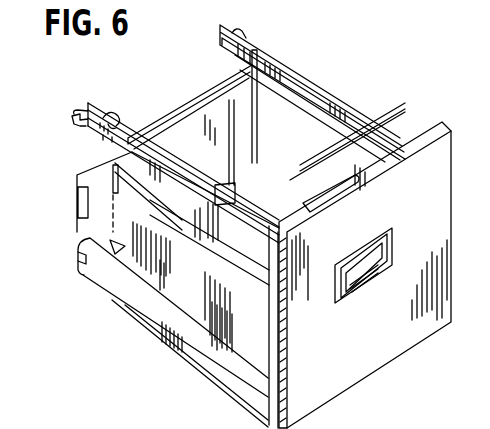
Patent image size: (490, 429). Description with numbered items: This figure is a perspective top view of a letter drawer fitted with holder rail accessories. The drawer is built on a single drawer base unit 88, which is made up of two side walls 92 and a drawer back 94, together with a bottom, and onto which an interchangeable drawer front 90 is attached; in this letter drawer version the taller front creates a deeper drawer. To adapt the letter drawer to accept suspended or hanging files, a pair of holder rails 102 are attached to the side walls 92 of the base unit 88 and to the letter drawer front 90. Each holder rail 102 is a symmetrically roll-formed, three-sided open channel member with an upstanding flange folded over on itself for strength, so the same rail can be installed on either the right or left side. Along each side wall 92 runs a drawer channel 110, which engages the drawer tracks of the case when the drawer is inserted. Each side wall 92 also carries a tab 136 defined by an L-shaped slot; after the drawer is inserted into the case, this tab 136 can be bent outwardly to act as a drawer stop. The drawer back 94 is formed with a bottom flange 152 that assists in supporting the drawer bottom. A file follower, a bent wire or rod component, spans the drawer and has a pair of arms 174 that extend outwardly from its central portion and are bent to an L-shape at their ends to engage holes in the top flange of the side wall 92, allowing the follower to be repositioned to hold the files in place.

The drawer base unit 88 is at (362, 118).
The drawer front 90 is at (410, 340).
The side wall 92 is at (168, 291).
The drawer back 94 is at (203, 93).
The holder rail 102 is at (312, 83).
The drawer channel 110 is at (215, 347).
The tab 136 is at (144, 274).
The bottom flange 152 is at (163, 103).
The arms 174 is at (331, 190).